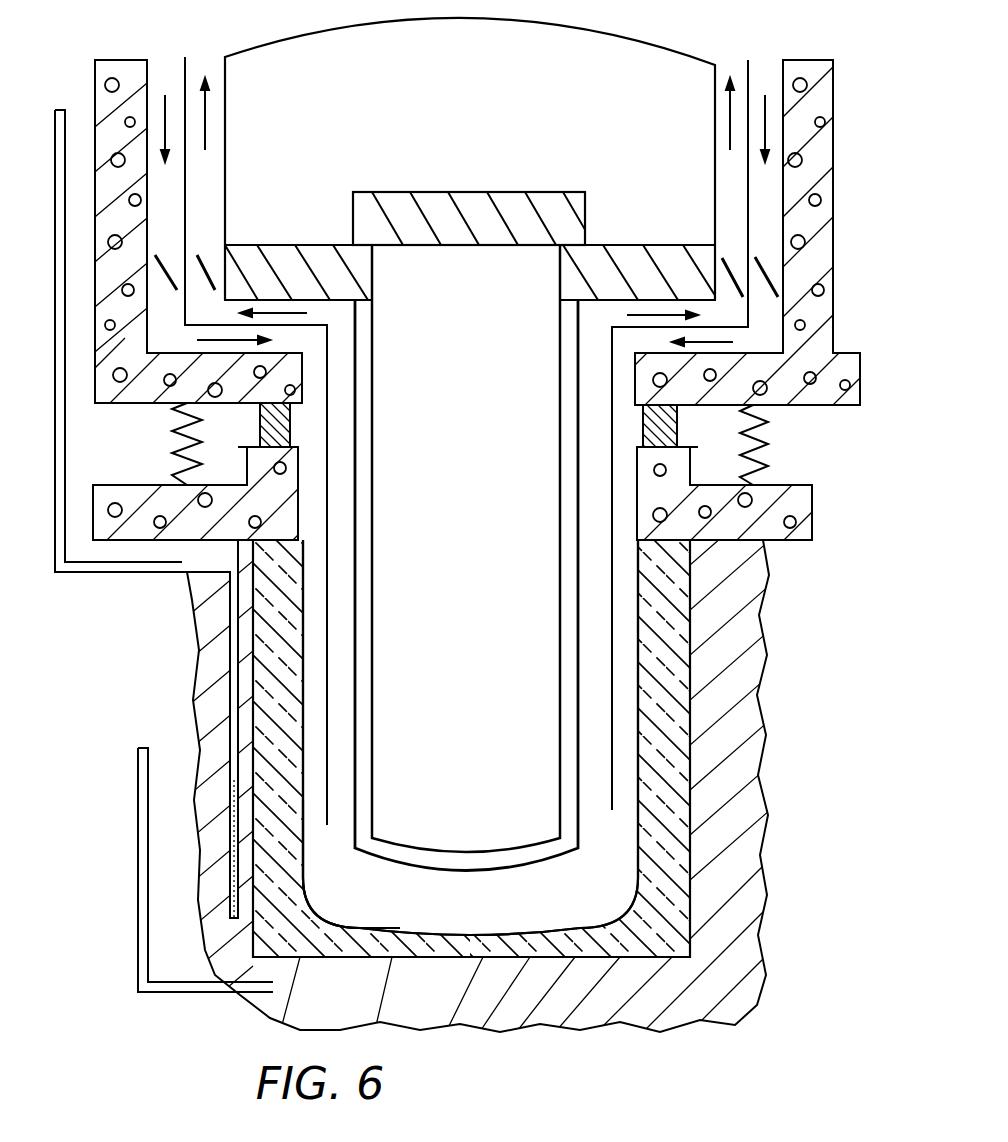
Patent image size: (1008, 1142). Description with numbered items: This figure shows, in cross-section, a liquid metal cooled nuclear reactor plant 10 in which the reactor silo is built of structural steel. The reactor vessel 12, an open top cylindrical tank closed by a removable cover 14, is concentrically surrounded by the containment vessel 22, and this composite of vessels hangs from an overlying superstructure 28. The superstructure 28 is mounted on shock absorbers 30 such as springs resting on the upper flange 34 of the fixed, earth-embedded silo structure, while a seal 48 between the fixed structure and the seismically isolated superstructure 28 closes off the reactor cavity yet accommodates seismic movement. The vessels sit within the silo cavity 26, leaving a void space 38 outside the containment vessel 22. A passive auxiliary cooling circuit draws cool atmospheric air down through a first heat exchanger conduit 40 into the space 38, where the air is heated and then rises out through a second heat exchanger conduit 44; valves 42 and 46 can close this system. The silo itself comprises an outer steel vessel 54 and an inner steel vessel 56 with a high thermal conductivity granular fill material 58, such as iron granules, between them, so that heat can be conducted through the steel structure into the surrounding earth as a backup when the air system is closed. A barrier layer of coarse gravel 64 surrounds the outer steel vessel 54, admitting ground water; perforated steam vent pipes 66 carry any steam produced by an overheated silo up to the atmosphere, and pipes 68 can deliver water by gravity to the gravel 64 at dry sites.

The liquid metal cooled nuclear reactor plant 10 is at (432, 763).
The reactor vessel 12 is at (372, 348).
The removable cover 14 is at (455, 192).
The containment vessel 22 is at (355, 430).
The silo cavity 26 is at (473, 916).
The superstructure 28 is at (833, 203).
The shock absorbers 30 is at (178, 455).
The upper edge flange 34 is at (698, 450).
The space 38 is at (307, 843).
The first fluid flow heat exchanger conduit 40 is at (160, 72).
The valve 42 is at (157, 257).
The second fluid flow heat exchanger conduit 44 is at (206, 68).
The valve 46 is at (197, 257).
The seal 48 is at (258, 427).
The outer steel vessel 54 is at (690, 623).
The inner steel vessel 56 is at (640, 667).
The granular fill material 58 is at (670, 698).
The coarse gravel 64 is at (207, 710).
The perforated steam vent pipes 66 is at (160, 572).
The pipes 68 is at (138, 890).